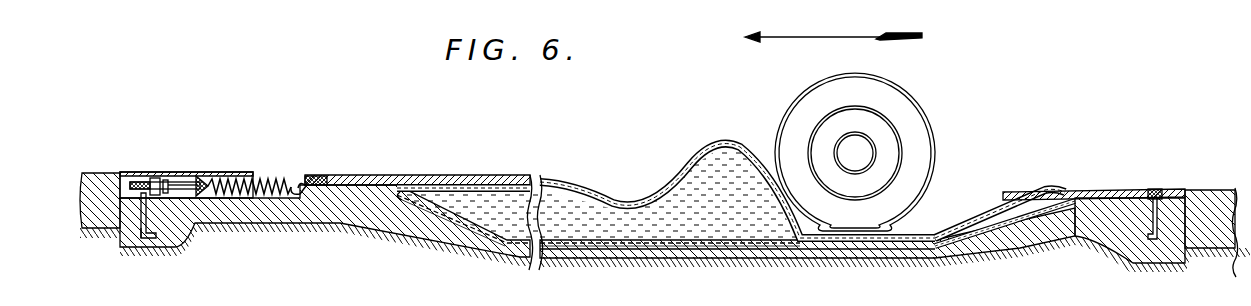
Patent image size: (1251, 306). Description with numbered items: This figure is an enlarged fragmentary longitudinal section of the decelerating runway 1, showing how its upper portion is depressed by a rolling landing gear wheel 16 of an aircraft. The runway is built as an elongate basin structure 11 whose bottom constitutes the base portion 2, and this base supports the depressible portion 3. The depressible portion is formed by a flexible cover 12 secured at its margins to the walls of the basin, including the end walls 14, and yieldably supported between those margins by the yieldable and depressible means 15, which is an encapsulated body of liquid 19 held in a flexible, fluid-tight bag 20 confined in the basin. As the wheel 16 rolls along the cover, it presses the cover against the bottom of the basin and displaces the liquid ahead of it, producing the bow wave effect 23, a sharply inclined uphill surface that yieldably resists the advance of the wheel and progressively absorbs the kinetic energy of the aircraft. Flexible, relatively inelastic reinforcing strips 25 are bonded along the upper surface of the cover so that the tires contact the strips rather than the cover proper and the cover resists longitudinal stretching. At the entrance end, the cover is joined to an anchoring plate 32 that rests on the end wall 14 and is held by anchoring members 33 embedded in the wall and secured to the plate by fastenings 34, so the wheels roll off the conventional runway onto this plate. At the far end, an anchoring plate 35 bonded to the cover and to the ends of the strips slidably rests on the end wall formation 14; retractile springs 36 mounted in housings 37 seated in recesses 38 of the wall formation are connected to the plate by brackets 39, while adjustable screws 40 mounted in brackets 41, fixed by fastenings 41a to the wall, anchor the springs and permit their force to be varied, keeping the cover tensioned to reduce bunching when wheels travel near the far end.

The decelerating runway 1 is at (961, 210).
The base portion 2 is at (782, 262).
The depressible portion 3 is at (652, 168).
The basin structure 11 is at (853, 252).
The flexible cover 12 is at (991, 196).
The end wall 14 is at (303, 212).
The yieldable and depressible means 15 is at (569, 212).
The landing gear wheel 16 is at (921, 118).
The body of liquid 19 is at (708, 222).
The flexible fluid-tight bag 20 is at (613, 239).
The bow wave effect 23 is at (724, 136).
The reinforcing strips 25 is at (1032, 191).
The anchoring plate 32 is at (1108, 195).
The anchoring members 33 is at (1158, 229).
The fastenings 34 is at (1155, 190).
The anchoring plate 35 is at (391, 180).
The retractile springs 36 is at (258, 182).
The housings 37 is at (207, 181).
The recesses 38 is at (259, 200).
The brackets 39 is at (300, 182).
The adjustable screws 40 is at (176, 184).
The brackets 41 is at (157, 182).
The fastenings 41a is at (134, 240).